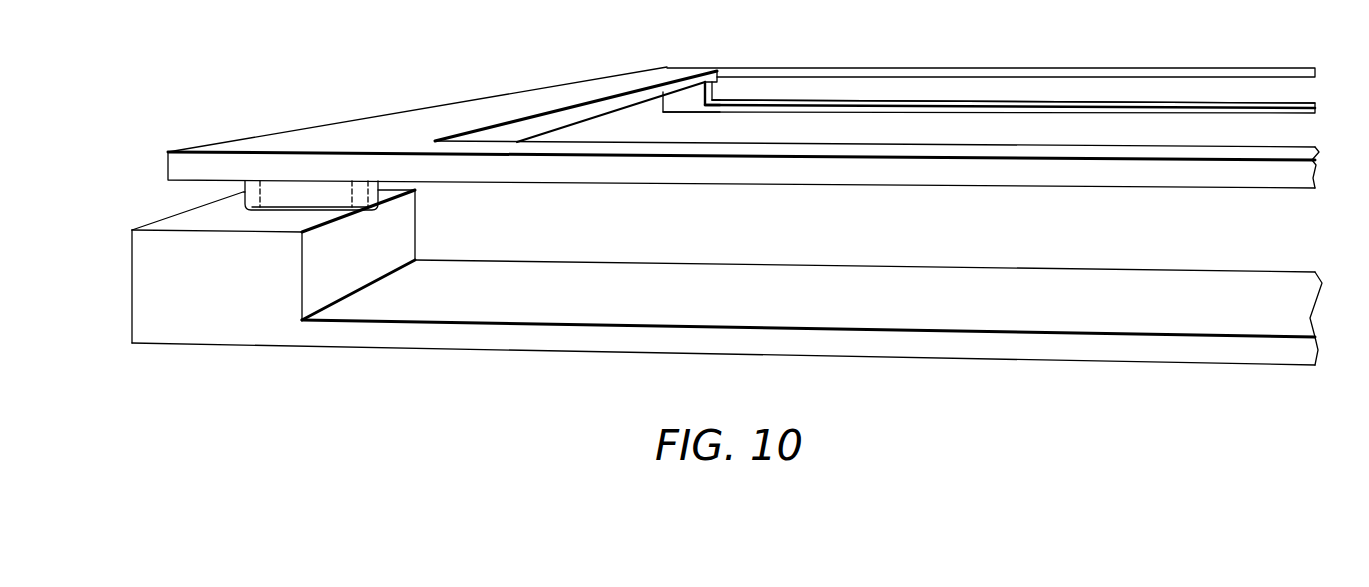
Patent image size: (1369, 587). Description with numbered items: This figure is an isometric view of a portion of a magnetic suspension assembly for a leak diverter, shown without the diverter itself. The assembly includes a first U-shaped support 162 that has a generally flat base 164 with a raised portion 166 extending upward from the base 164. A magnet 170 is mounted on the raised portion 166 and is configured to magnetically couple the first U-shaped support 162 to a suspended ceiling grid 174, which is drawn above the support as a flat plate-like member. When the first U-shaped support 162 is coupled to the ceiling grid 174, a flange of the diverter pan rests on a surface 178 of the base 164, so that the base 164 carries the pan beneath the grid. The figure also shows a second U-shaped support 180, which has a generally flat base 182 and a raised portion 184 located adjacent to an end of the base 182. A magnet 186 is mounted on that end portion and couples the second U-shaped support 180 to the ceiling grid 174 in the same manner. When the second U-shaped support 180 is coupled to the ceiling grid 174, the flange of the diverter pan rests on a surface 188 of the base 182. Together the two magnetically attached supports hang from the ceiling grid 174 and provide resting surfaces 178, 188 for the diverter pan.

The first U-shaped support 162 is at (517, 338).
The base 164 is at (623, 338).
The raised portion 166 is at (213, 252).
The magnet 170 is at (273, 197).
The suspended ceiling grid 174 is at (537, 102).
The surface 178 is at (732, 293).
The second U-shaped support 180 is at (957, 113).
The base 182 is at (1087, 105).
The raised portion 184 is at (690, 95).
The magnet 186 is at (707, 82).
The surface 188 is at (857, 103).